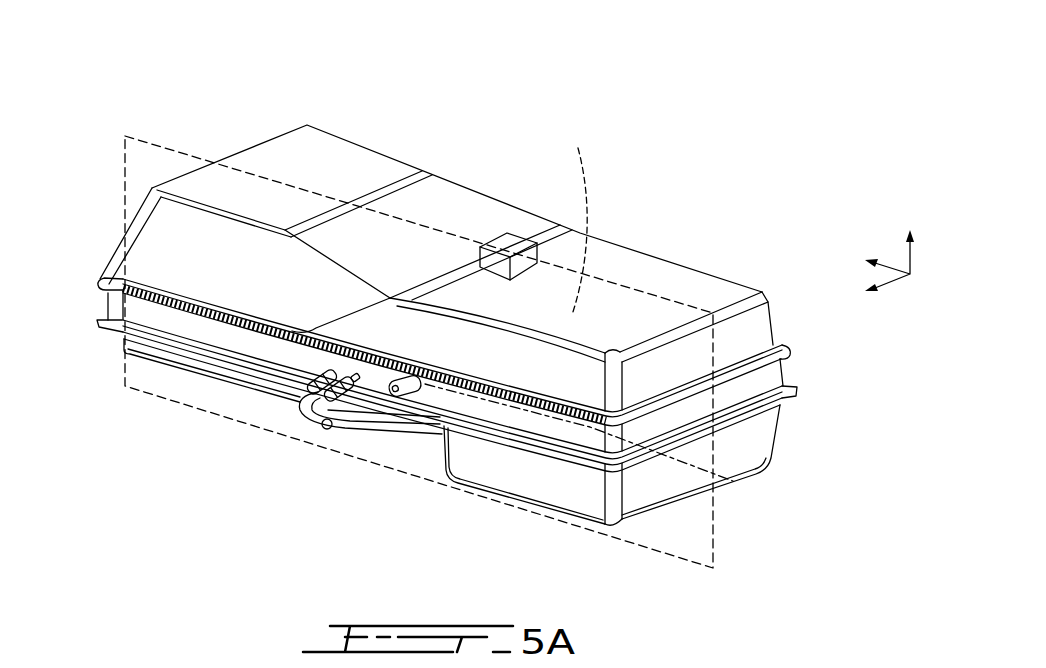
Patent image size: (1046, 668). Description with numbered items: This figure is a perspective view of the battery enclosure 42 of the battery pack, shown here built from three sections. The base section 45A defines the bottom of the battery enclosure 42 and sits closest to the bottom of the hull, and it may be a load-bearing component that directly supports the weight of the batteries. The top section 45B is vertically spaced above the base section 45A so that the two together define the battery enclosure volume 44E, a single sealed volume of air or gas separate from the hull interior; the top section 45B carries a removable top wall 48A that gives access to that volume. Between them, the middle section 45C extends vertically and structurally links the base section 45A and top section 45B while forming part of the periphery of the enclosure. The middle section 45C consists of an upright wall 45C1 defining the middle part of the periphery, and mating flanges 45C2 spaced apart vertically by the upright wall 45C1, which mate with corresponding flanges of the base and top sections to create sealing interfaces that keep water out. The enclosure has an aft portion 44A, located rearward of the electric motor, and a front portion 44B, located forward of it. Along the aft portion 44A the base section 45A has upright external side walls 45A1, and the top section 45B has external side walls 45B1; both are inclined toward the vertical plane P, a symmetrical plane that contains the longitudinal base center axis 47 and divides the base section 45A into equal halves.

The battery enclosure 42 is at (702, 226).
The aft portion 44A is at (230, 157).
The front portion 44B is at (732, 264).
The battery enclosure volume 44E is at (585, 218).
The base section 45A is at (785, 436).
The external side walls 45A1 is at (167, 352).
The top section 45B is at (770, 288).
The external side walls 45B1 is at (165, 218).
The middle section 45C is at (800, 376).
The upright wall 45C1 is at (116, 307).
The mating flanges 45C2 is at (110, 277).
The base center axis 47 is at (776, 488).
The removable top wall 48A is at (473, 203).
The vertical plane P is at (716, 545).